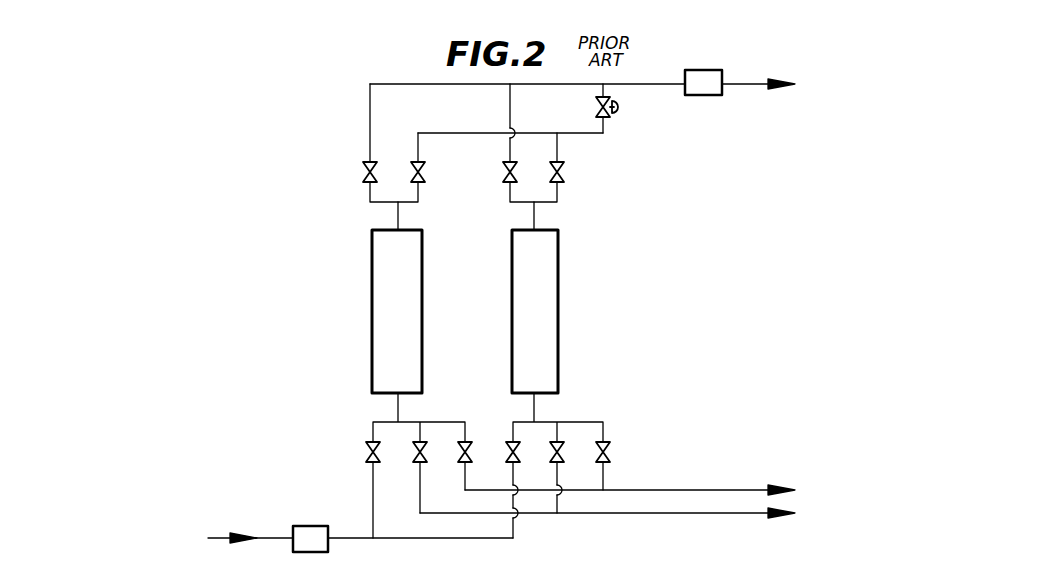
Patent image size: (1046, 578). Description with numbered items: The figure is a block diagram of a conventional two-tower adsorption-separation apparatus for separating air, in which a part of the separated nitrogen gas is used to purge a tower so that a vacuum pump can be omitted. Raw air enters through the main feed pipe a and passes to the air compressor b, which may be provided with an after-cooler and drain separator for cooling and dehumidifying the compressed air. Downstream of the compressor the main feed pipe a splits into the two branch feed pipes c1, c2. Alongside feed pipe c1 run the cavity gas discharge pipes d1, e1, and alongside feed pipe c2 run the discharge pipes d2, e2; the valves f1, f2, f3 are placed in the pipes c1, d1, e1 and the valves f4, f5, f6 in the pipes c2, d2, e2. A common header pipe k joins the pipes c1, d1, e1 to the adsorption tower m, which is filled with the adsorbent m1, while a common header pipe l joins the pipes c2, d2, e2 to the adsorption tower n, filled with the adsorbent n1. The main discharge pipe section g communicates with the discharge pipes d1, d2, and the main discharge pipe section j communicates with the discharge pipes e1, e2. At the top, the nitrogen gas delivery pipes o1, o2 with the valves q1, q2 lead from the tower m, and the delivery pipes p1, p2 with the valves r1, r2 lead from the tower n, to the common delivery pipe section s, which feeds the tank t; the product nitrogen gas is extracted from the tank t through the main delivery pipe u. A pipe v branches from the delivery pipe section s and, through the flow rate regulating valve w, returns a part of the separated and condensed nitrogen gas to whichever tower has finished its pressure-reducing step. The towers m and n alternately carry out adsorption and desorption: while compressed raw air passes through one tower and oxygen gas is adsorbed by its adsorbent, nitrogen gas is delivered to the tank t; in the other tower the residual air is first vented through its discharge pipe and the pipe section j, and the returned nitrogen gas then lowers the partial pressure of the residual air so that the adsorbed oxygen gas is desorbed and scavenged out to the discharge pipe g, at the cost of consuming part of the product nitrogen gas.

The main feed pipe a is at (272, 538).
The air compressor b is at (315, 526).
The branch feed pipe c1 is at (375, 521).
The branch feed pipe c2 is at (514, 533).
The cavity gas discharge pipe d1 is at (422, 500).
The cavity gas discharge pipe d2 is at (559, 498).
The cavity gas discharge pipe e1 is at (467, 479).
The cavity gas discharge pipe e2 is at (605, 480).
The valve f1 is at (368, 450).
The valve f2 is at (414, 450).
The valve f3 is at (459, 450).
The valve f4 is at (507, 450).
The valve f5 is at (551, 450).
The valve f6 is at (597, 450).
The main discharge pipe section g is at (705, 513).
The main discharge pipe section j is at (722, 490).
The common header pipe k is at (406, 408).
The common header pipe l is at (543, 408).
The adsorption tower m is at (422, 279).
The adsorbent m1 is at (404, 331).
The adsorption tower n is at (558, 285).
The adsorbent n1 is at (540, 338).
The nitrogen gas delivery pipe o1 is at (371, 202).
The nitrogen gas delivery pipe o2 is at (420, 201).
The nitrogen gas delivery pipe p1 is at (510, 201).
The nitrogen gas delivery pipe p2 is at (560, 201).
The valve q1 is at (382, 162).
The valve q2 is at (426, 176).
The valve r1 is at (517, 182).
The valve r2 is at (565, 175).
The common delivery pipe section s is at (655, 83).
The tank t is at (705, 70).
The main delivery pipe u is at (735, 83).
The purge line v is at (514, 130).
The flow rate regulating valve w is at (620, 107).